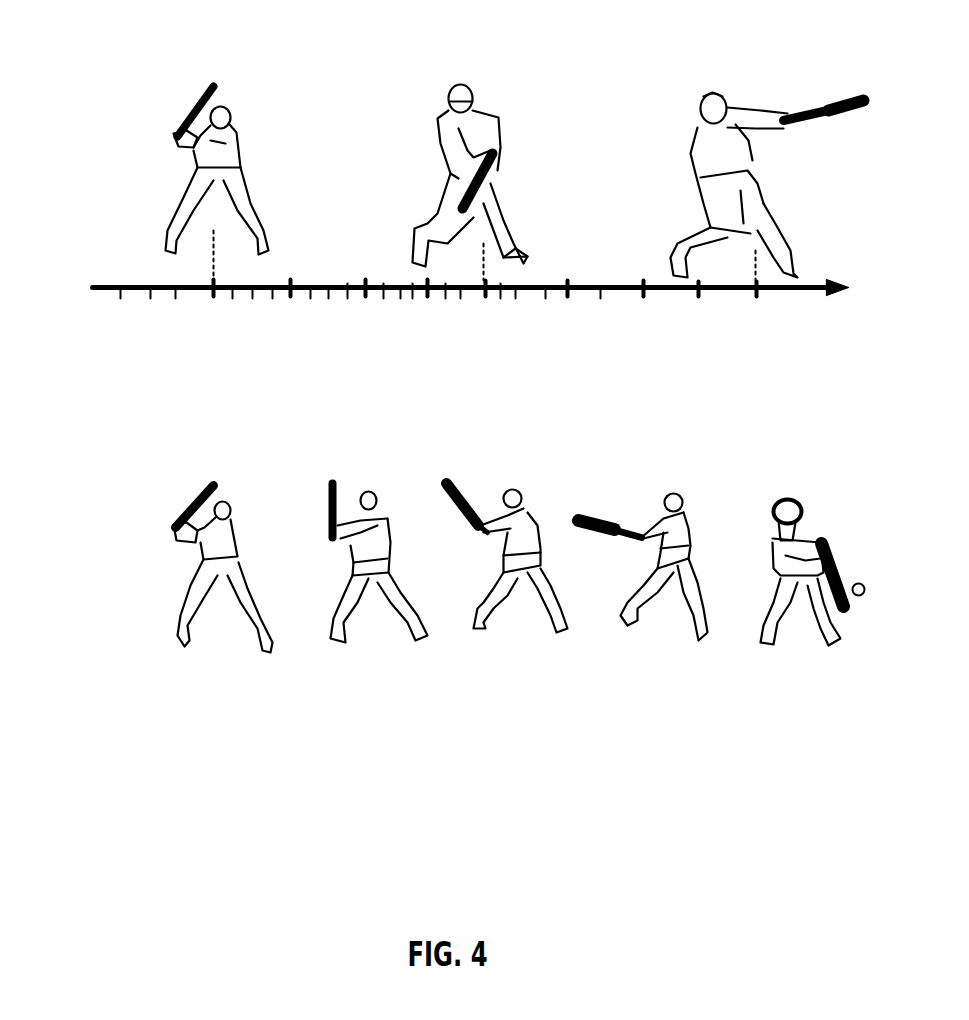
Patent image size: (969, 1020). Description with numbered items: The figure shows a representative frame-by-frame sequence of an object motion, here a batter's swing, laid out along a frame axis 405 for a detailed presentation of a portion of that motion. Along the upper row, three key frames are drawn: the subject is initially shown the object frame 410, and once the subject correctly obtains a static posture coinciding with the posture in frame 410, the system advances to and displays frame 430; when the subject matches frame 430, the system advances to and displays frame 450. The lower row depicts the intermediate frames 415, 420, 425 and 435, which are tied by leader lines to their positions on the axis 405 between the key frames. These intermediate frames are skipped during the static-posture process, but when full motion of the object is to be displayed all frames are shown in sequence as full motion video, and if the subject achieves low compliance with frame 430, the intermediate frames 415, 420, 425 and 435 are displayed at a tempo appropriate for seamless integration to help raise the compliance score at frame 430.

The timeline axis of frame index Fx 405 is at (92, 289).
The object frame 410 is at (210, 417).
The intermediate frame 415 is at (283, 303).
The intermediate frame 420 is at (377, 297).
The intermediate frame 425 is at (433, 297).
The frame 430 is at (470, 140).
The intermediate frame 435 is at (565, 295).
The frame 450 is at (767, 144).